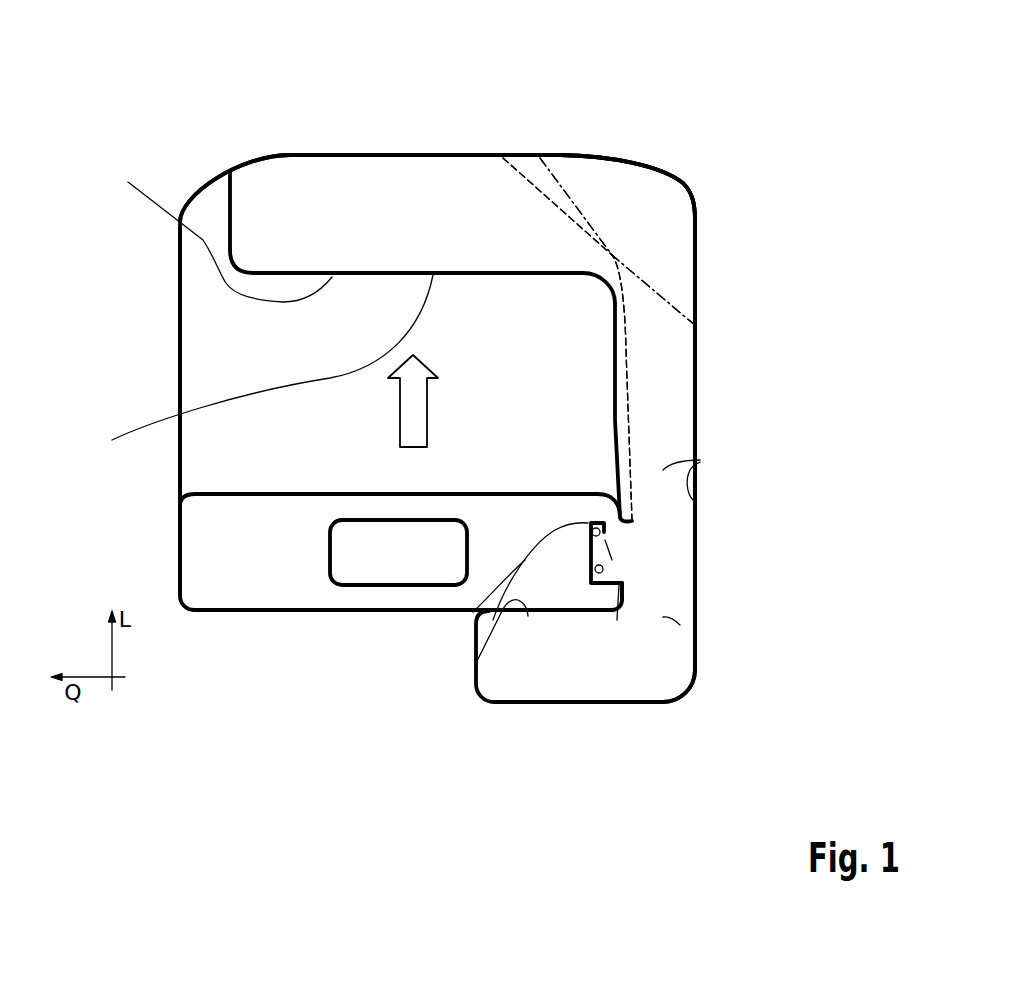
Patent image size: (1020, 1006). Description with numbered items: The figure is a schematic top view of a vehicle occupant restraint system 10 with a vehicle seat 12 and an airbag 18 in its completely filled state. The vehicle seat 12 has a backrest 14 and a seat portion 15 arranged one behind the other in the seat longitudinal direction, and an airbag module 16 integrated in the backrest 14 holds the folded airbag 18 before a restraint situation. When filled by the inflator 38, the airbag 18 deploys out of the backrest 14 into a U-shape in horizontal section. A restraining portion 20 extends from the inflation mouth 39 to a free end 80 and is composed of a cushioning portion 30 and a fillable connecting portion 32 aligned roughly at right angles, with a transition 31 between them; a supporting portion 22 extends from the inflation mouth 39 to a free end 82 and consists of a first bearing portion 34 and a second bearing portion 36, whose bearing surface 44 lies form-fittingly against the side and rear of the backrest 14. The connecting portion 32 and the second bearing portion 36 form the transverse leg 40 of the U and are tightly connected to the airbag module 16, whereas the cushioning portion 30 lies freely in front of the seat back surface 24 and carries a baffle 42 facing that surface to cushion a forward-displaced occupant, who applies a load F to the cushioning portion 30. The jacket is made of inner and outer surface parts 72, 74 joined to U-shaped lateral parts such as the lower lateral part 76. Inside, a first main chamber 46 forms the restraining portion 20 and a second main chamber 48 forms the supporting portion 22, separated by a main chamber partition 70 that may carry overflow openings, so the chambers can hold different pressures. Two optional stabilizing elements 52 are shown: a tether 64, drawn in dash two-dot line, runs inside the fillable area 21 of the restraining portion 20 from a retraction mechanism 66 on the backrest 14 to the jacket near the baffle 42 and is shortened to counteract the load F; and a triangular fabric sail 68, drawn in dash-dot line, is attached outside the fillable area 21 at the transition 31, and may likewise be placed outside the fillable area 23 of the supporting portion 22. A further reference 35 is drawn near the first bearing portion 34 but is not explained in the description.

The vehicle occupant restraint system 10 is at (157, 312).
The vehicle seat 12 is at (312, 618).
The backrest 14 is at (260, 600).
The seat portion 15 is at (197, 383).
The airbag module 16 is at (595, 563).
The airbag 18 is at (765, 423).
The restraining portion 20 is at (720, 171).
The fillable area 21 is at (437, 208).
The supporting portion 22 is at (710, 705).
The fillable area 23 is at (680, 625).
The seat back surface 24 is at (244, 488).
The cushioning portion 30 is at (459, 147).
The transition 31 is at (672, 180).
The connecting portion 32 is at (705, 258).
The first bearing portion 34 is at (588, 715).
The bottom wall 35 is at (668, 682).
The second bearing portion 36 is at (705, 590).
The inflator 38 is at (603, 548).
The inflation mouth 39 is at (617, 620).
The transverse leg 40 is at (668, 383).
The baffle 42 is at (216, 231).
The bearing surface 44 is at (493, 620).
The first main chamber 46 is at (422, 260).
The second main chamber 48 is at (644, 442).
The stabilizing element 52 is at (600, 339).
The tether 64 is at (565, 194).
The fabric sail 68 is at (622, 268).
The retraction mechanism 66 is at (473, 612).
The main chamber partition 70 is at (693, 500).
The inner surface part 72 is at (255, 370).
The outer surface part 74 is at (700, 460).
The lower lateral part 76 is at (327, 193).
The free end 80 is at (224, 200).
The free end 82 is at (475, 665).
The load F is at (410, 418).